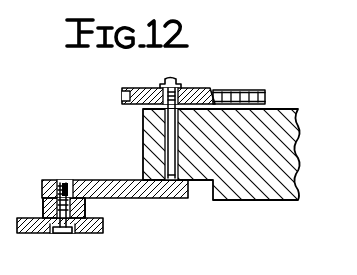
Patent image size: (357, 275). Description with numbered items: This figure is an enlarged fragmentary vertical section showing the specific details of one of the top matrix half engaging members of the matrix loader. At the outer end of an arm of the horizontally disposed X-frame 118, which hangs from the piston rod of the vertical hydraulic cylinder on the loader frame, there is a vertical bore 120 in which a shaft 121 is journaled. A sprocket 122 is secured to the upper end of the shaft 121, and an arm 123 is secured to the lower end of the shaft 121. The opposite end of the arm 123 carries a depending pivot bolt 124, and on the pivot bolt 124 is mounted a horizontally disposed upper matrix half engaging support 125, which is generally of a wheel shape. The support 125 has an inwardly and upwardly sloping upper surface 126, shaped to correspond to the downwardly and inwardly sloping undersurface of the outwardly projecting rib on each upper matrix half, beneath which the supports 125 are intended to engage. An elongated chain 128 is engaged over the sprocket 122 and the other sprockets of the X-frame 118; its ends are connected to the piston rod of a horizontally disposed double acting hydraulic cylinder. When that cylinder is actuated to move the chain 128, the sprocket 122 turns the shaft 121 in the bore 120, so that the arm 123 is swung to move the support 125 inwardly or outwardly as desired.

The X-frame 118 is at (283, 155).
The vertical bore 120 is at (170, 124).
The shaft 121 is at (163, 150).
The sprocket 122 is at (187, 88).
The arm 123 is at (147, 191).
The pivot bolt 124 is at (65, 233).
The upper matrix half engaging support 125 is at (105, 227).
The upper surface 126 is at (88, 209).
The chain 128 is at (250, 90).